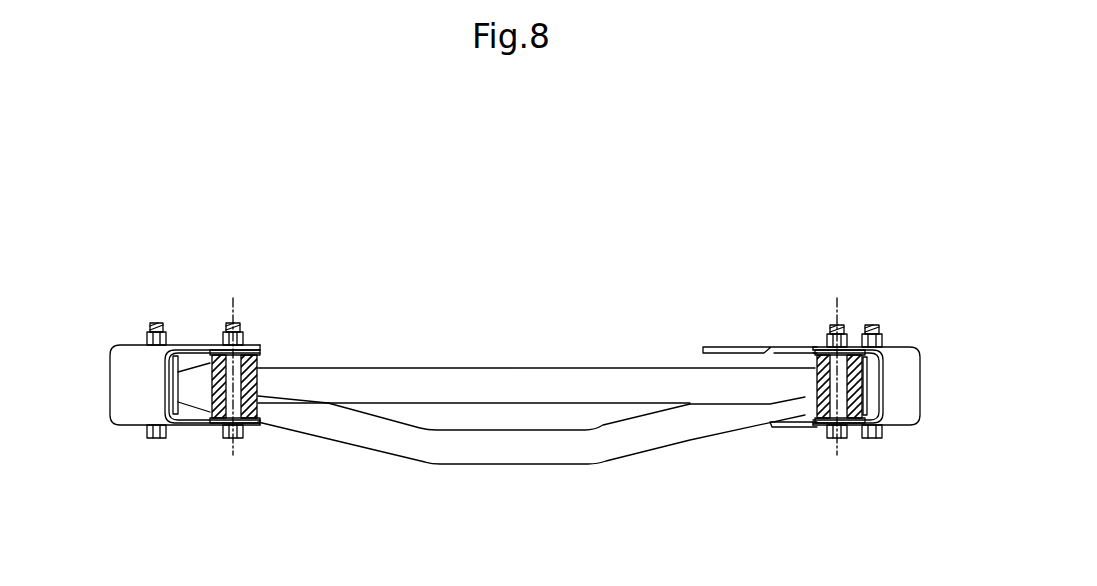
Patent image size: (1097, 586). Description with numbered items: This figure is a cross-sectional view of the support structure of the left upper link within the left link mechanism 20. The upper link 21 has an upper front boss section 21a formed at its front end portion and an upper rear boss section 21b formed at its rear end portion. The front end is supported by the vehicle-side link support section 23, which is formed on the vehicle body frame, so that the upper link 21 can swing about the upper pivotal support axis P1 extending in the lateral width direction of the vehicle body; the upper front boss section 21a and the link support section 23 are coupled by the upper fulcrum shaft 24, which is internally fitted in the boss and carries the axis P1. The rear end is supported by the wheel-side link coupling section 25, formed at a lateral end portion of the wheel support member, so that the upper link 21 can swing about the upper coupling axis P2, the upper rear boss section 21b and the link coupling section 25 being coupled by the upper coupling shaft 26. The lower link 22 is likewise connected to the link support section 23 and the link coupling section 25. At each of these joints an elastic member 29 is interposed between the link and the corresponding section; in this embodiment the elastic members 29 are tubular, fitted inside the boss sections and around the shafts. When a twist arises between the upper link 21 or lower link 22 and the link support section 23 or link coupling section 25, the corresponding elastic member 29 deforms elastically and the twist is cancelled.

The link mechanism 20 is at (405, 278).
The upper link 21 is at (522, 378).
The upper front boss section 21a is at (257, 395).
The upper rear boss section 21b is at (805, 396).
The lower link 22 is at (525, 453).
The link support section 23 is at (117, 384).
The upper fulcrum shaft 24 is at (223, 433).
The link coupling section 25 is at (903, 378).
The upper coupling shaft 26 is at (825, 437).
The elastic member 29 is at (257, 387).
The upper pivotal support axis P1 is at (232, 361).
The upper coupling axis P2 is at (836, 362).